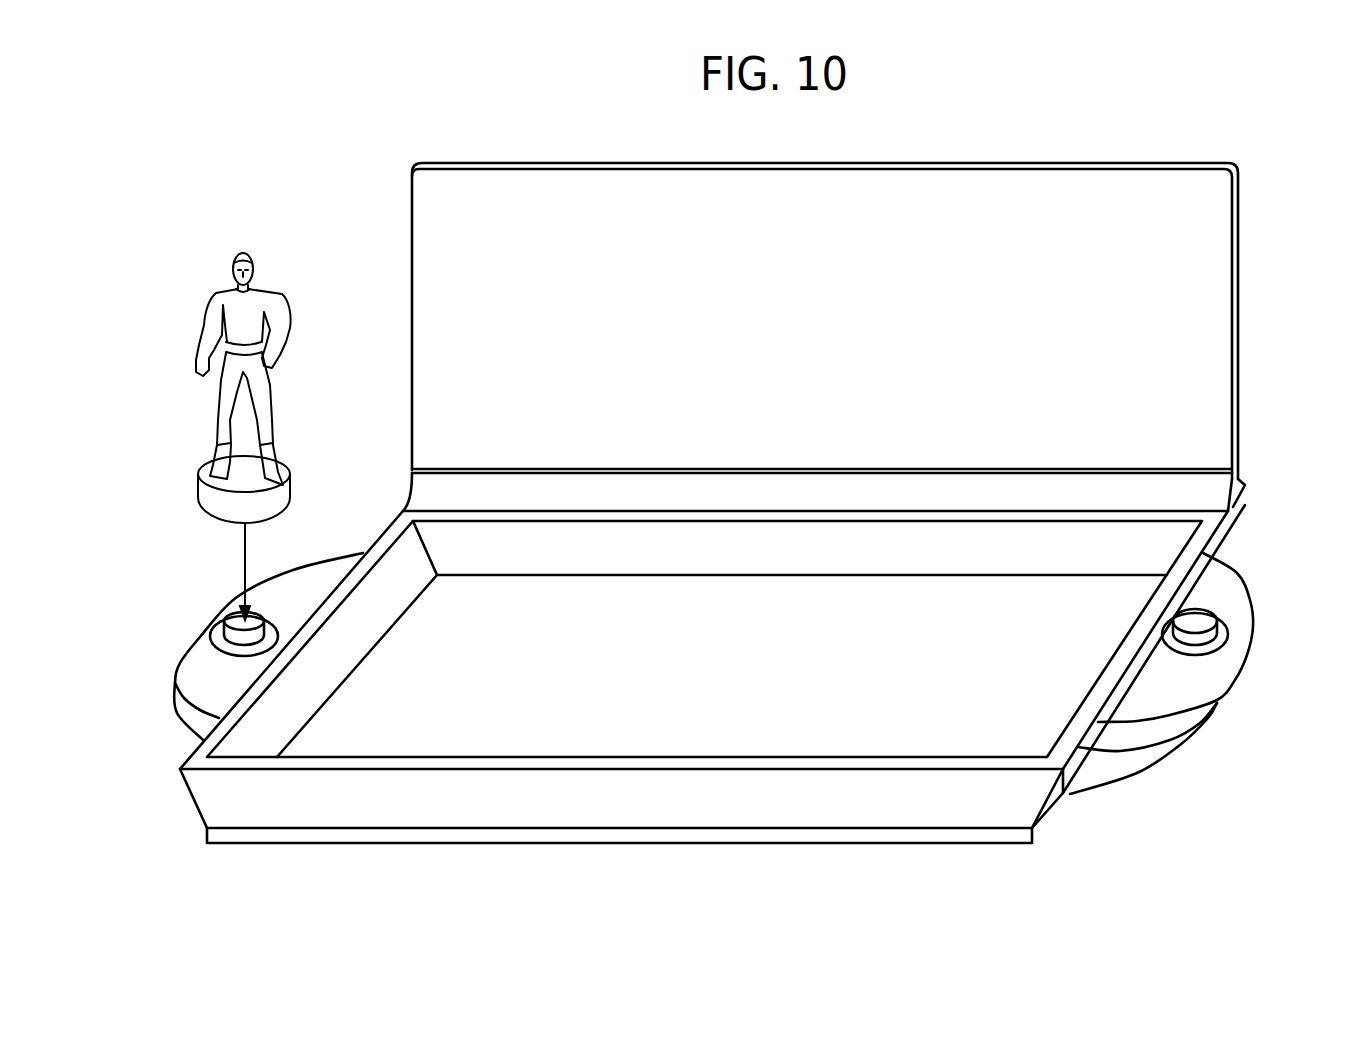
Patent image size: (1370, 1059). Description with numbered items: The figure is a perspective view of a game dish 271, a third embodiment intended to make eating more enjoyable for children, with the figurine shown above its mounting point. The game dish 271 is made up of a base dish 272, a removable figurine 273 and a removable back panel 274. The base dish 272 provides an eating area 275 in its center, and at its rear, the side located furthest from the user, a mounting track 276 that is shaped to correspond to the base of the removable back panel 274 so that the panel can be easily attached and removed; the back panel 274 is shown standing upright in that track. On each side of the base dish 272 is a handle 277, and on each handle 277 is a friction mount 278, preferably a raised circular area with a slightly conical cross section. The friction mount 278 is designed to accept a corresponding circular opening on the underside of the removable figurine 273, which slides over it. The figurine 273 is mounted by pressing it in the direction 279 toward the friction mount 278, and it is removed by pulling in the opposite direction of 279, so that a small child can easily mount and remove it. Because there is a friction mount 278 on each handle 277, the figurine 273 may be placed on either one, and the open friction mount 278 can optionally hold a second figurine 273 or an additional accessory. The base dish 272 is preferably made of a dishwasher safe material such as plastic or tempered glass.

The game dish 271 is at (738, 524).
The base dish 272 is at (968, 805).
The removable figurine 273 is at (255, 300).
The removable back panel 274 is at (1203, 197).
The eating area 275 is at (970, 688).
The mounting track 276 is at (1236, 500).
The handle 277 is at (190, 660).
The friction mount 278 is at (234, 619).
The direction 279 is at (247, 549).